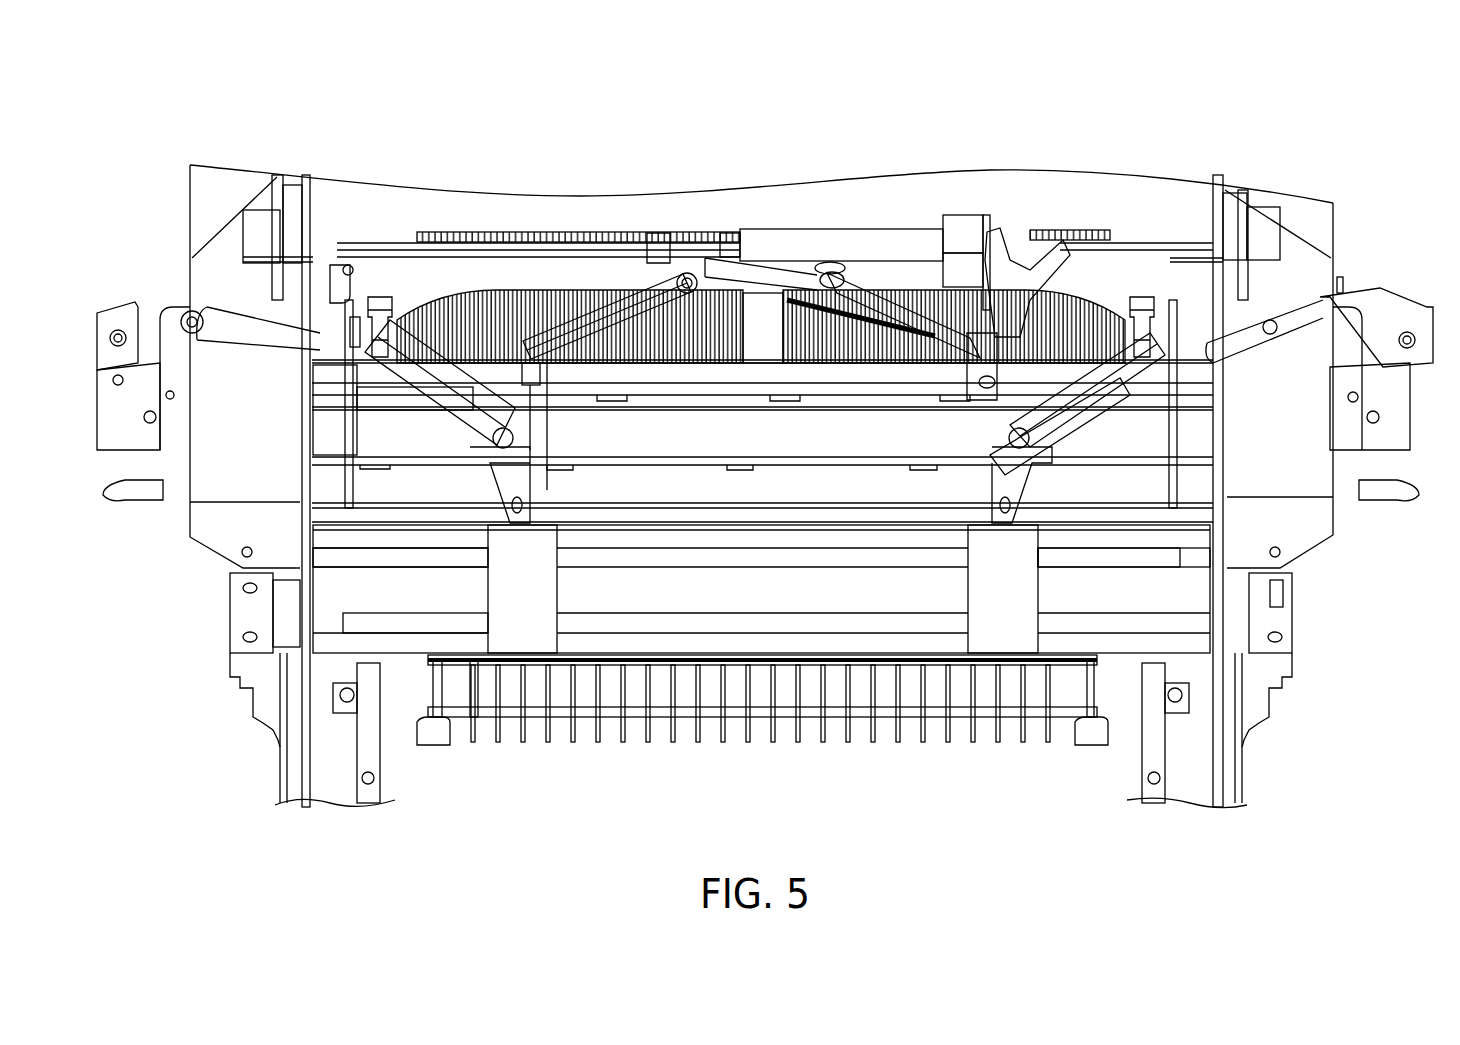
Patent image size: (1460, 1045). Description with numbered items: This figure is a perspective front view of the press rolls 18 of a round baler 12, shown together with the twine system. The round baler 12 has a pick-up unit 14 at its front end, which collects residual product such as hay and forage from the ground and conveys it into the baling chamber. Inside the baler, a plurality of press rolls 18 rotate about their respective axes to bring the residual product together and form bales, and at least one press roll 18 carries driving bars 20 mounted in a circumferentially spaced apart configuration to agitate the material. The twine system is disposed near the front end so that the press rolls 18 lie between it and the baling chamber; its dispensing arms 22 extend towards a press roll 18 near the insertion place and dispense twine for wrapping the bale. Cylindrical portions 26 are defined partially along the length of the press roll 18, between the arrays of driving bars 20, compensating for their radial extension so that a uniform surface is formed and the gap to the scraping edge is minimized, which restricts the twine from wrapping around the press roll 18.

The round baler 12 is at (1335, 88).
The pick-up unit 14 is at (950, 730).
The press rolls 18 is at (1023, 490).
The driving bar 20 is at (505, 505).
The dispensing arms 22 is at (343, 555).
The cylindrical portions 26 is at (528, 580).